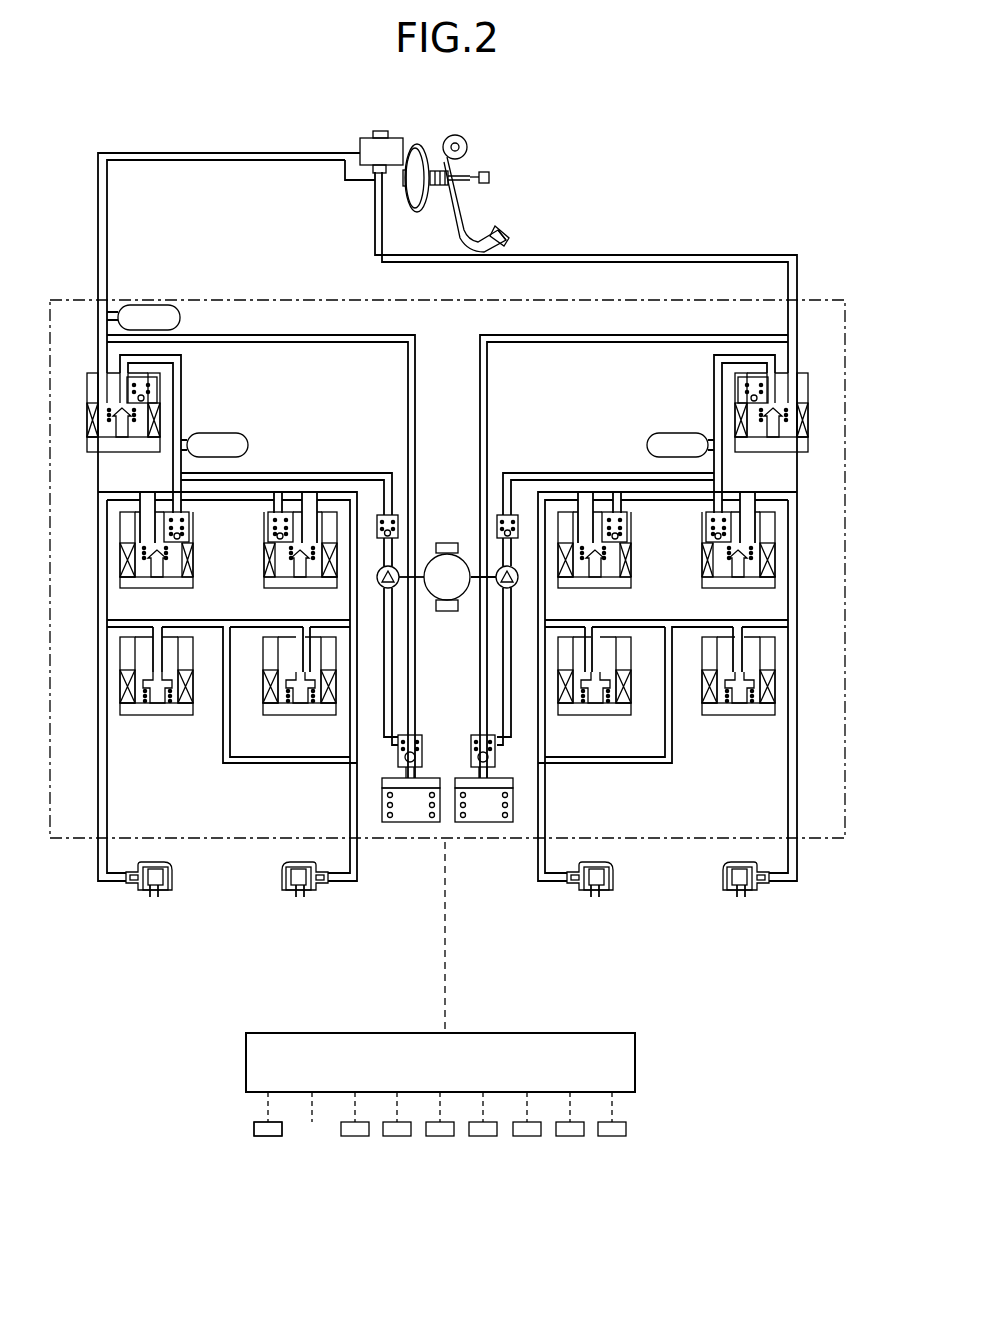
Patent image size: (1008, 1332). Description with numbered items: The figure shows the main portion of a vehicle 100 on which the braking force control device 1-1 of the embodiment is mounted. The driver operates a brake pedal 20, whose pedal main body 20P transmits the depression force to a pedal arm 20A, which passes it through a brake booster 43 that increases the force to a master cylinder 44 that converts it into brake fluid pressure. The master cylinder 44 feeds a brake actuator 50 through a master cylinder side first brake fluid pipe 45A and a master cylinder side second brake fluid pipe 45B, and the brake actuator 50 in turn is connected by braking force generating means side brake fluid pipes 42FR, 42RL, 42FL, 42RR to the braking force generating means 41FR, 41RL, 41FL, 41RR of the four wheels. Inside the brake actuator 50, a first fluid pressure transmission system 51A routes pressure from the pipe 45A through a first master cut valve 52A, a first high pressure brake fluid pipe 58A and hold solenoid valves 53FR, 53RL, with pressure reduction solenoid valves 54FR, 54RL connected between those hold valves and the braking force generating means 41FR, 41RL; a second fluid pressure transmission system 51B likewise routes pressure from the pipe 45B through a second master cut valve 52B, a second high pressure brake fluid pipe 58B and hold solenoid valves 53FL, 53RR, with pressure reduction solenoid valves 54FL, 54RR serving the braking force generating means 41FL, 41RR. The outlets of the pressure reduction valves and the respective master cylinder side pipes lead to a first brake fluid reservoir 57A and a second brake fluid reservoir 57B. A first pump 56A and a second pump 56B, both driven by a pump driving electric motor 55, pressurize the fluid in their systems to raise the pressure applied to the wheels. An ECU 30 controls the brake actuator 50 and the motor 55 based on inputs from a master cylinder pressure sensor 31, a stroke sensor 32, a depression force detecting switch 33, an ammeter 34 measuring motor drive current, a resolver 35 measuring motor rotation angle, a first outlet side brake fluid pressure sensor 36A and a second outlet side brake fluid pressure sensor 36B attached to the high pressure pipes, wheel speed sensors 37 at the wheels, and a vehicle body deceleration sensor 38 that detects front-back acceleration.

The vehicle 100 is at (84, 107).
The braking force control device 1-1 is at (699, 141).
The brake pedal 20 is at (525, 204).
The pedal arm 20A is at (476, 194).
The pedal main body 20P is at (504, 231).
The ECU 30 is at (552, 1033).
The master cylinder pressure sensor 31 is at (151, 312).
The stroke sensor 32 is at (463, 142).
The depression force detecting switch 33 is at (489, 176).
The ammeter 34 is at (447, 543).
The resolver 35 is at (447, 612).
The first outlet side brake fluid pressure sensor 36A is at (226, 440).
The second outlet side brake fluid pressure sensor 36B is at (668, 442).
The wheel speed sensors 37 is at (568, 1137).
The vehicle body deceleration sensor 38 is at (610, 1137).
The braking force generating means 41FR is at (153, 887).
The braking force generating means 41RL is at (303, 887).
The braking force generating means 41FL is at (587, 887).
The braking force generating means 41RR is at (741, 887).
The braking force generating means side brake fluid pipe 42FR is at (102, 877).
The braking force generating means side brake fluid pipe 42RL is at (333, 886).
The braking force generating means side brake fluid pipe 42FL is at (547, 886).
The braking force generating means side brake fluid pipe 42RR is at (790, 886).
The brake booster 43 is at (420, 145).
The master cylinder 44 is at (348, 185).
The master cylinder side first brake fluid pipe 45A is at (108, 215).
The master cylinder side second brake fluid pipe 45B is at (696, 252).
The brake actuator 50 is at (437, 845).
The first fluid pressure transmission system 51A is at (268, 330).
The second fluid pressure transmission system 51B is at (632, 330).
The first master cut valve 52A is at (95, 453).
The second master cut valve 52B is at (800, 453).
The hold solenoid valve 53FR is at (141, 588).
The hold solenoid valve 53RL is at (279, 588).
The hold solenoid valve 53FL is at (596, 588).
The hold solenoid valve 53RR is at (724, 588).
The pressure reduction solenoid valve 54FR is at (142, 716).
The pressure reduction solenoid valve 54RL is at (279, 716).
The pressure reduction solenoid valve 54FL is at (579, 716).
The pressure reduction solenoid valve 54RR is at (716, 716).
The pump driving electric motor 55 is at (467, 595).
The first pump 56A is at (378, 525).
The second pump 56B is at (517, 525).
The first brake fluid reservoir 57A is at (408, 823).
The second brake fluid reservoir 57B is at (487, 823).
The first high pressure brake fluid pipe 58A is at (183, 373).
The second high pressure brake fluid pipe 58B is at (712, 373).